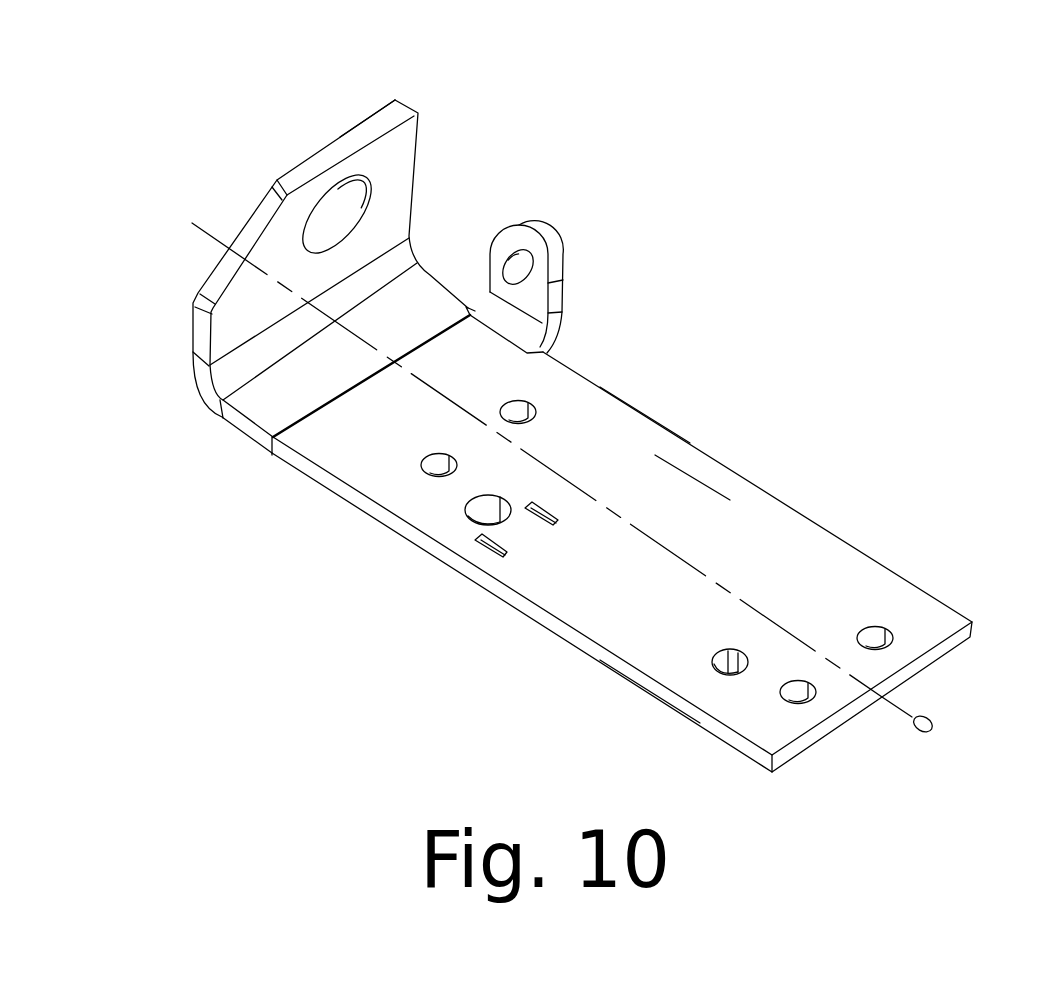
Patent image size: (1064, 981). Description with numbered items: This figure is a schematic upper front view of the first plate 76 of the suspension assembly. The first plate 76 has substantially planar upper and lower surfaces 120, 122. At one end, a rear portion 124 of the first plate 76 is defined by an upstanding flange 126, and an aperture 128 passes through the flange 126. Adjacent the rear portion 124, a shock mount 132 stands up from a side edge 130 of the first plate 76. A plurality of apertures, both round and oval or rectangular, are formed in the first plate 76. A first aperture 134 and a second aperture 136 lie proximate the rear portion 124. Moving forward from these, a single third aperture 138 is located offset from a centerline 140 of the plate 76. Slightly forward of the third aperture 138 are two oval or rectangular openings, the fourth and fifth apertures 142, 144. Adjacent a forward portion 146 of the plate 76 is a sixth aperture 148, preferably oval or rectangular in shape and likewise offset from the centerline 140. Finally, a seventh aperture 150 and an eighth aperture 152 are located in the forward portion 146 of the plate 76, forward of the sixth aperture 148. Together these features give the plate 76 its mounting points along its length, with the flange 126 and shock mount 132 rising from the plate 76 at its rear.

The first plate 76 is at (655, 455).
The upper surface 120 is at (750, 522).
The lower surface 122 is at (829, 582).
The rear portion 124 is at (220, 456).
The upstanding flange 126 is at (380, 118).
The aperture 128 is at (330, 207).
The side edge 130 is at (600, 386).
The shock mount 132 is at (553, 252).
The first aperture 134 is at (437, 459).
The second aperture 136 is at (515, 403).
The third aperture 138 is at (485, 518).
The centerline 140 is at (935, 724).
The fourth aperture 142 is at (507, 554).
The fifth aperture 144 is at (557, 521).
The forward portion 146 is at (606, 709).
The sixth aperture 148 is at (727, 657).
The seventh aperture 150 is at (806, 699).
The eighth aperture 152 is at (888, 642).